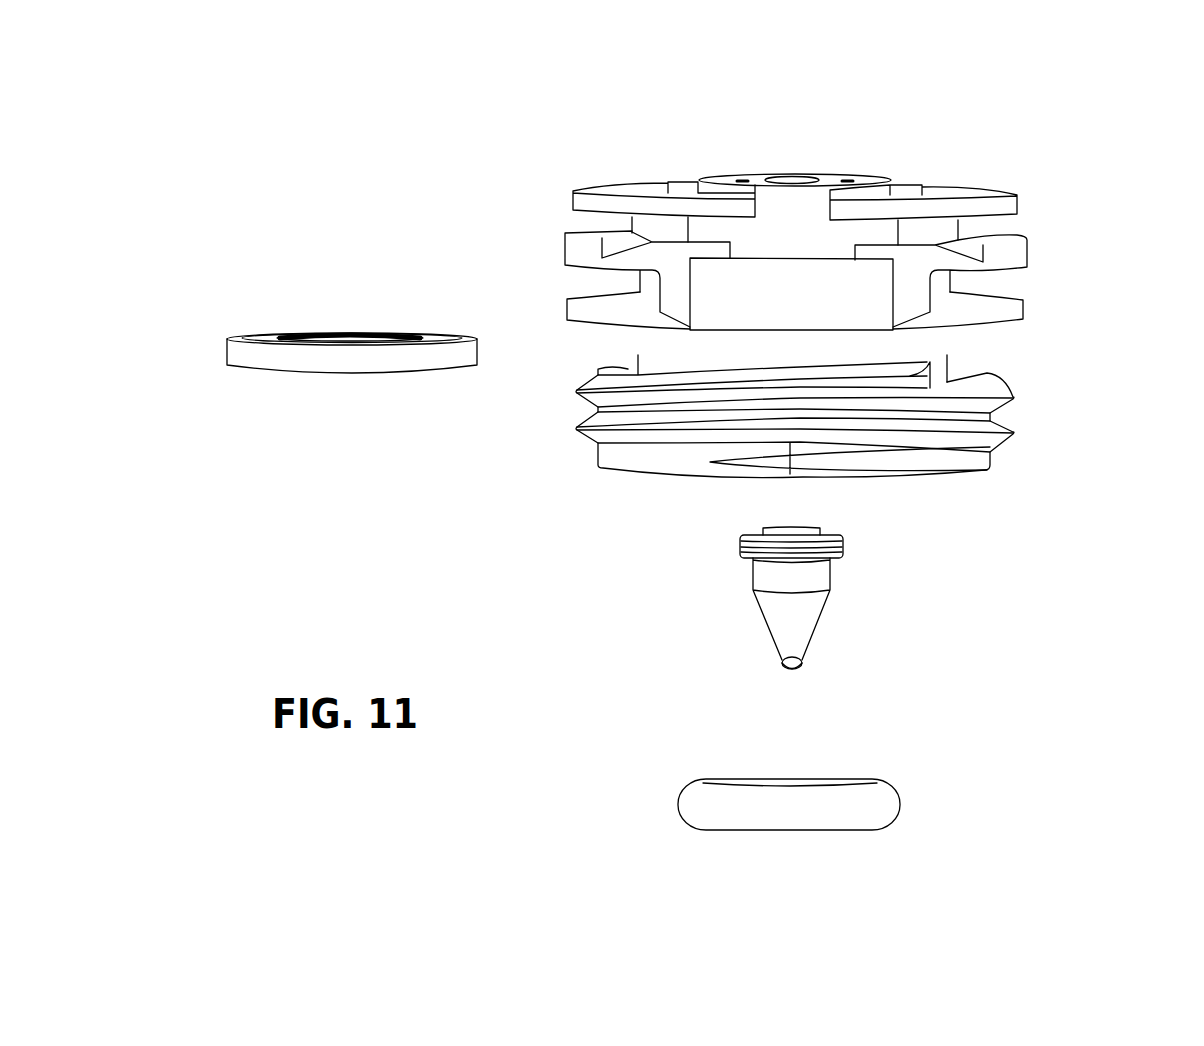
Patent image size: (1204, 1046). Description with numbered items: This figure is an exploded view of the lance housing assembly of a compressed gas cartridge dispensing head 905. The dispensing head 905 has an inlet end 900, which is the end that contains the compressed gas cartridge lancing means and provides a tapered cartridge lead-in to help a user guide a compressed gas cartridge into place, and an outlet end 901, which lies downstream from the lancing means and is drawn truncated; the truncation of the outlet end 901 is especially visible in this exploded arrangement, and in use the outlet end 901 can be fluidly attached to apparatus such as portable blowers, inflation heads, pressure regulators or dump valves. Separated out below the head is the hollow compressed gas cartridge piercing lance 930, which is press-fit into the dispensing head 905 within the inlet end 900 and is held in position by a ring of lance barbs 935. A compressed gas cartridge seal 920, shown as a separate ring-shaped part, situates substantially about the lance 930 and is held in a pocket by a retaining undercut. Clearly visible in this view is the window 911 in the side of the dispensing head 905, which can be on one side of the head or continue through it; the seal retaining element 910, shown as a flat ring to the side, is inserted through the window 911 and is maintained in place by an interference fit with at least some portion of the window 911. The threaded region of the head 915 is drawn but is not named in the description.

The inlet end 900 is at (673, 510).
The outlet end 901 is at (901, 154).
The compressed gas cartridge dispensing head 905 is at (982, 334).
The seal retaining element 910 is at (343, 359).
The window 911 is at (625, 372).
The threaded portion 915 is at (1015, 418).
The compressed gas cartridge seal 920 is at (883, 805).
The compressed gas cartridge piercing lance 930 is at (803, 625).
The ring of lance barbs 935 is at (853, 542).